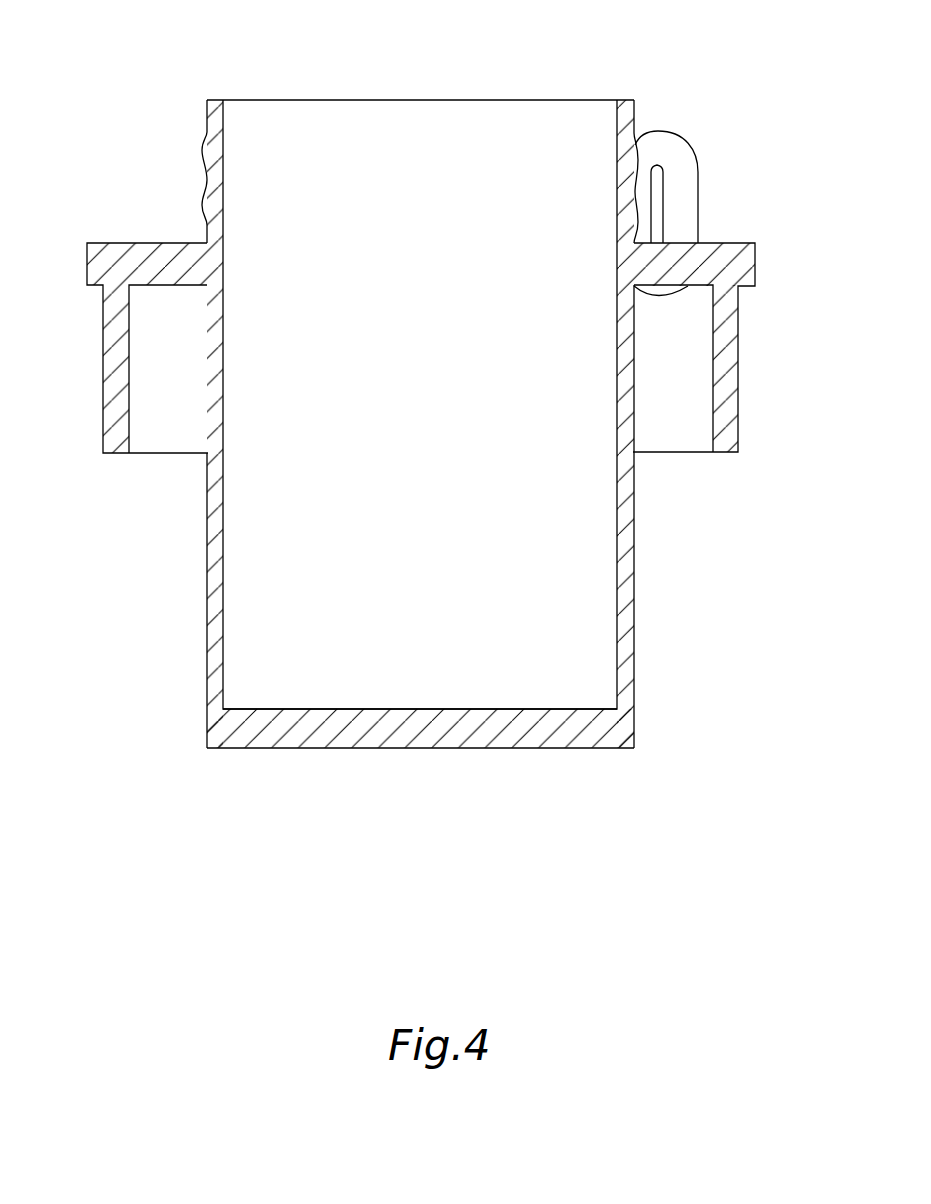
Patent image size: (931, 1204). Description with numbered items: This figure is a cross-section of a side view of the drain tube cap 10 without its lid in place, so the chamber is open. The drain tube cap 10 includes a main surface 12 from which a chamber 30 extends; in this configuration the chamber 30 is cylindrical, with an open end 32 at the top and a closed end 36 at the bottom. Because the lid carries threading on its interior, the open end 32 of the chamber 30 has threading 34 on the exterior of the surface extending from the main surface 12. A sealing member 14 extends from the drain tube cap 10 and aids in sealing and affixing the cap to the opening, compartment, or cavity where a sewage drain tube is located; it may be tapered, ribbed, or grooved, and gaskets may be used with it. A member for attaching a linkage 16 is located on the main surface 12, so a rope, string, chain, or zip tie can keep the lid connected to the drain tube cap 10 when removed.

The drain tube cap 10 is at (563, 51).
The main surface 12 is at (128, 242).
The sealing member 14 is at (738, 352).
The member for attaching a linkage 16 is at (670, 157).
The chamber 30 is at (248, 533).
The open end 32 is at (262, 99).
The threading 34 is at (205, 135).
The closed end 36 is at (363, 749).